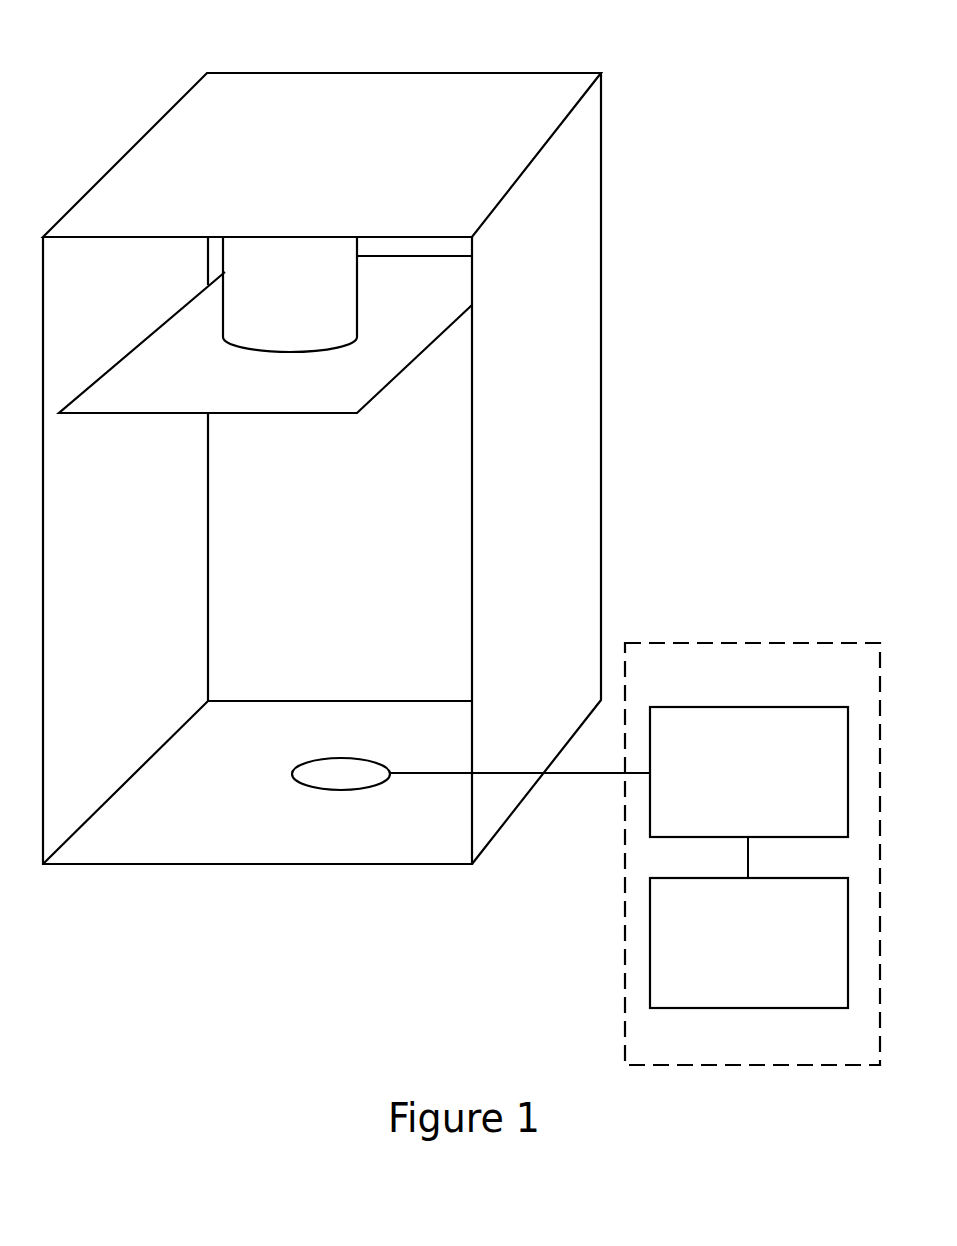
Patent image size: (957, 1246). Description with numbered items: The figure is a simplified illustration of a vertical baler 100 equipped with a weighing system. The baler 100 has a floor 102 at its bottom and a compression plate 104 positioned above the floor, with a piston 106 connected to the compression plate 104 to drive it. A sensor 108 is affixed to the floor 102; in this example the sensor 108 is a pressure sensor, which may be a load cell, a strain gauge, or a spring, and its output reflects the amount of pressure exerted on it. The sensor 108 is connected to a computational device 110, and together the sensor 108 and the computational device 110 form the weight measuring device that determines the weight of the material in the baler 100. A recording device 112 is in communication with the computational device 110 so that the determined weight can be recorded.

The baler 100 is at (495, 98).
The floor 102 is at (237, 723).
The compression plate 104 is at (372, 375).
The piston 106 is at (323, 322).
The sensor 108 is at (342, 783).
The computational device 110 is at (749, 792).
The recording device 112 is at (749, 943).